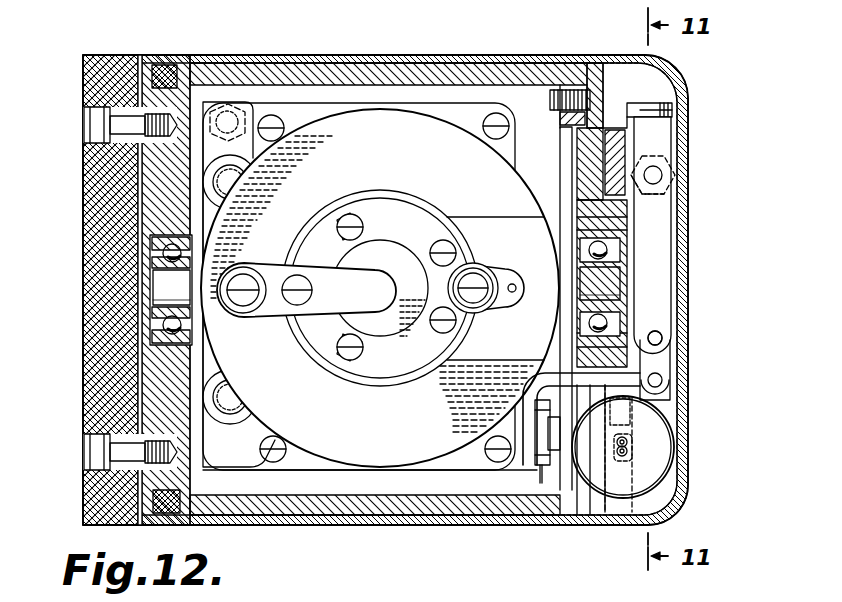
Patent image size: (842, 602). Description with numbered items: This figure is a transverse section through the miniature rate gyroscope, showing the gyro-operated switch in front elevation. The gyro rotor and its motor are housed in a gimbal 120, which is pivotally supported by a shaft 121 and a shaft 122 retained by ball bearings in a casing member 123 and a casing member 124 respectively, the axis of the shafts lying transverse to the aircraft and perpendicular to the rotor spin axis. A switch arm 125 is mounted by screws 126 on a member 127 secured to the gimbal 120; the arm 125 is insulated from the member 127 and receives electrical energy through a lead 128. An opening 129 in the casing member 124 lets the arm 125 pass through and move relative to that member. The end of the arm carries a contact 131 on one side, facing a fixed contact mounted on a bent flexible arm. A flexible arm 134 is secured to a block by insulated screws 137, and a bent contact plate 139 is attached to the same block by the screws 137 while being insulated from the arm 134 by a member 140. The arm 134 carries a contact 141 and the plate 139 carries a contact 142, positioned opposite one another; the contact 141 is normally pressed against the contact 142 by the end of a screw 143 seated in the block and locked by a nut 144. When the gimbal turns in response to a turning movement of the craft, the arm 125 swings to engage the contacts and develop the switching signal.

The gimbal 120 is at (380, 288).
The shaft 121 is at (160, 290).
The shaft 122 is at (583, 283).
The casing member 123 is at (150, 205).
The casing member 124 is at (590, 157).
The switch arm 125 is at (547, 383).
The screws 126 is at (625, 462).
The member 127 is at (525, 430).
The lead 128 is at (540, 474).
The opening 129 is at (630, 415).
The contact 131 is at (667, 381).
The flexible arm 134 is at (662, 359).
The insulated screws 137 is at (660, 107).
The bent contact plate 139 is at (660, 138).
The member 140 is at (627, 128).
The contact 141 is at (707, 328).
The contact 142 is at (657, 336).
The screw 143 is at (658, 172).
The nut 144 is at (668, 189).